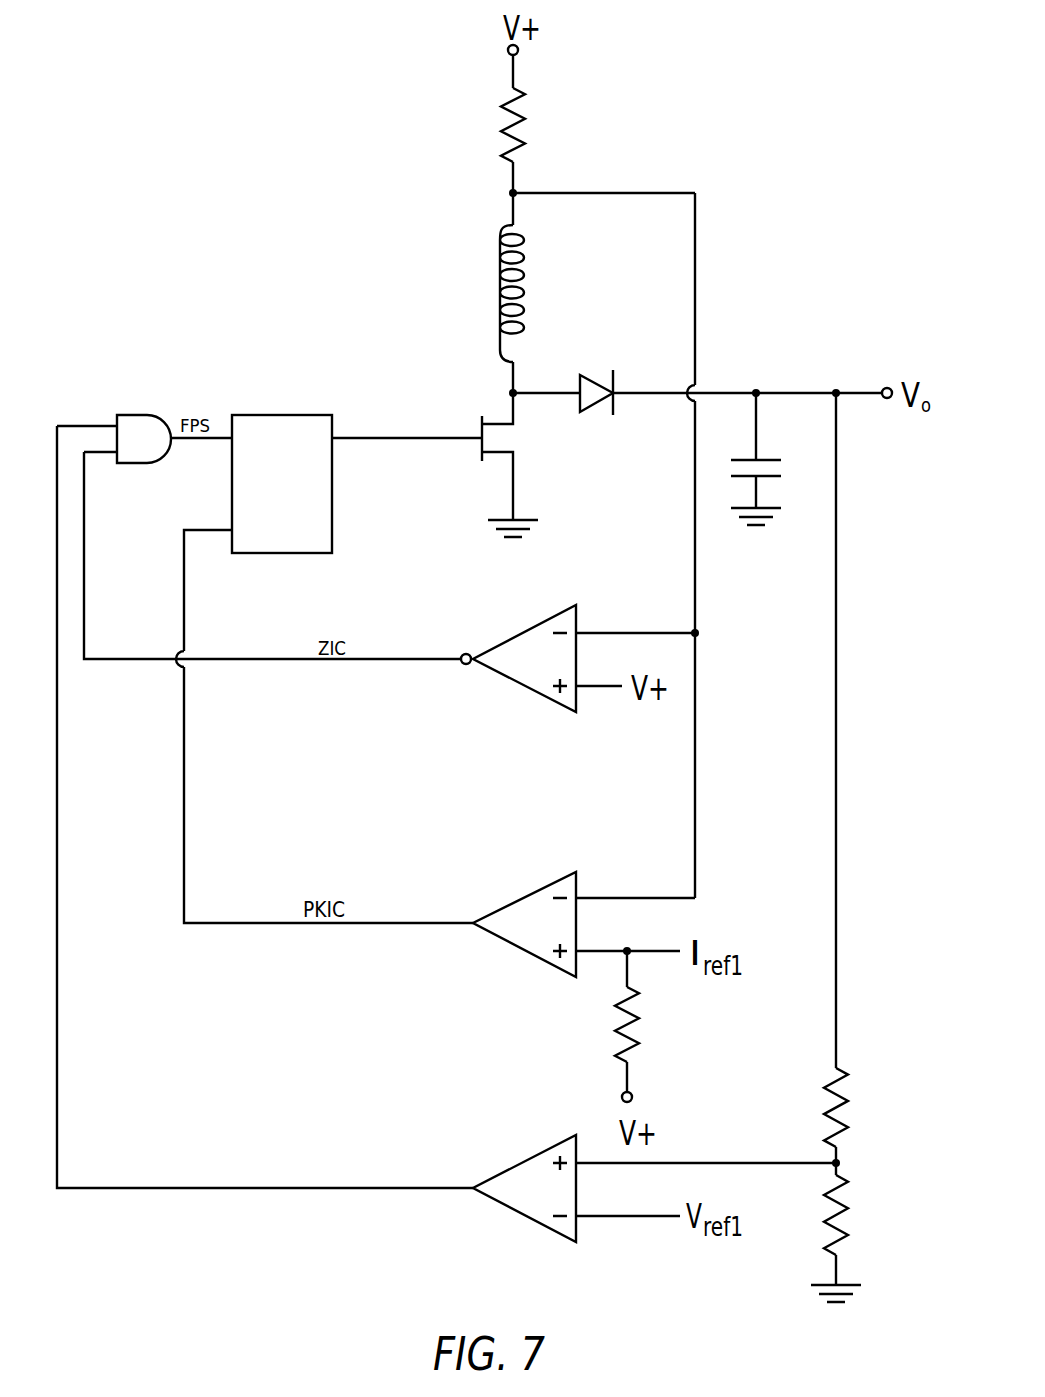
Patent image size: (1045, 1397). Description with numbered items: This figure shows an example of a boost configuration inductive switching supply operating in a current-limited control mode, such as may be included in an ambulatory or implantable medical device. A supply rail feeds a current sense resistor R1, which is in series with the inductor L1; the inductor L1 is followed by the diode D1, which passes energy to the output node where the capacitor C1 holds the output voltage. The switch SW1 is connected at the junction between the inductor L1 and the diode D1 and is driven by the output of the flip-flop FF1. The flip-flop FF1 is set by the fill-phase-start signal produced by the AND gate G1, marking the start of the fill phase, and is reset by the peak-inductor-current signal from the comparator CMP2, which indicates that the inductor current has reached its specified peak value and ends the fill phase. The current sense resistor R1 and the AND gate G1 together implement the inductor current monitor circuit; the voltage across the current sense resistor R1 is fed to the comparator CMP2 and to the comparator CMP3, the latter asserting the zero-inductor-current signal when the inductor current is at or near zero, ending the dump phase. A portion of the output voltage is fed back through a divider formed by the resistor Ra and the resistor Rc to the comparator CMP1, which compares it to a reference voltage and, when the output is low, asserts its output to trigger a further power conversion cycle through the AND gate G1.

The current sense resistor R1 is at (494, 125).
The inductor L1 is at (494, 293).
The diode D1 is at (596, 371).
The switch SW1 is at (522, 439).
The capacitor C1 is at (775, 473).
The AND gate G1 is at (144, 439).
The flip-flop FF1 is at (282, 484).
The comparator CMP1 is at (524, 1188).
The comparator CMP2 is at (524, 924).
The comparator CMP3 is at (518, 658).
The resistor Ra is at (857, 1107).
The resistor Rc is at (752, 1121).